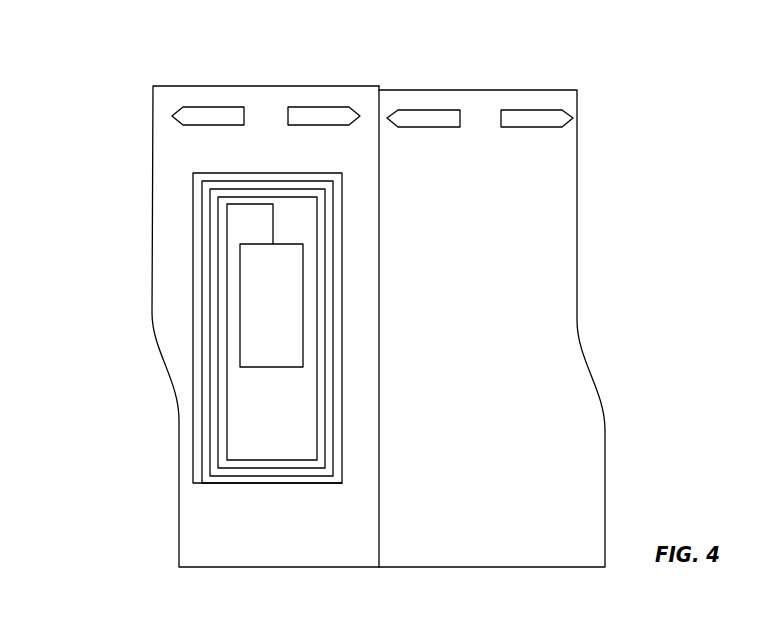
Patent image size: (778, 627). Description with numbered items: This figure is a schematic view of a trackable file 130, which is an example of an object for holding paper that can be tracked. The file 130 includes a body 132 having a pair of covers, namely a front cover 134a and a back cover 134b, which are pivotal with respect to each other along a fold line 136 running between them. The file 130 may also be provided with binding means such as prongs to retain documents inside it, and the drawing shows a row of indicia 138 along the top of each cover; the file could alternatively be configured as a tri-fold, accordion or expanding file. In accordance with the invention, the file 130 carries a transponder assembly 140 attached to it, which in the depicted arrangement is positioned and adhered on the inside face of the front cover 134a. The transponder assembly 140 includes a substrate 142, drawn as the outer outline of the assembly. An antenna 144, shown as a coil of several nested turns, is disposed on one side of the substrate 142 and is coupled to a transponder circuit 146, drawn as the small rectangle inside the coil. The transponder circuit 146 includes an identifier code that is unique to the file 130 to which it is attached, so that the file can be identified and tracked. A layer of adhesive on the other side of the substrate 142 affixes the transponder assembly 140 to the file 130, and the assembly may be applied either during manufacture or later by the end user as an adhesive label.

The file 130 is at (116, 54).
The body 132 is at (567, 218).
The front cover 134a is at (162, 152).
The back cover 134b is at (567, 295).
The fold line 136 is at (381, 90).
The arrow indicia / slots 138 is at (232, 105).
The transponder assembly 140 is at (199, 488).
The substrate 142 is at (335, 465).
The antenna 144 is at (283, 477).
The transponder circuit 146 is at (295, 367).